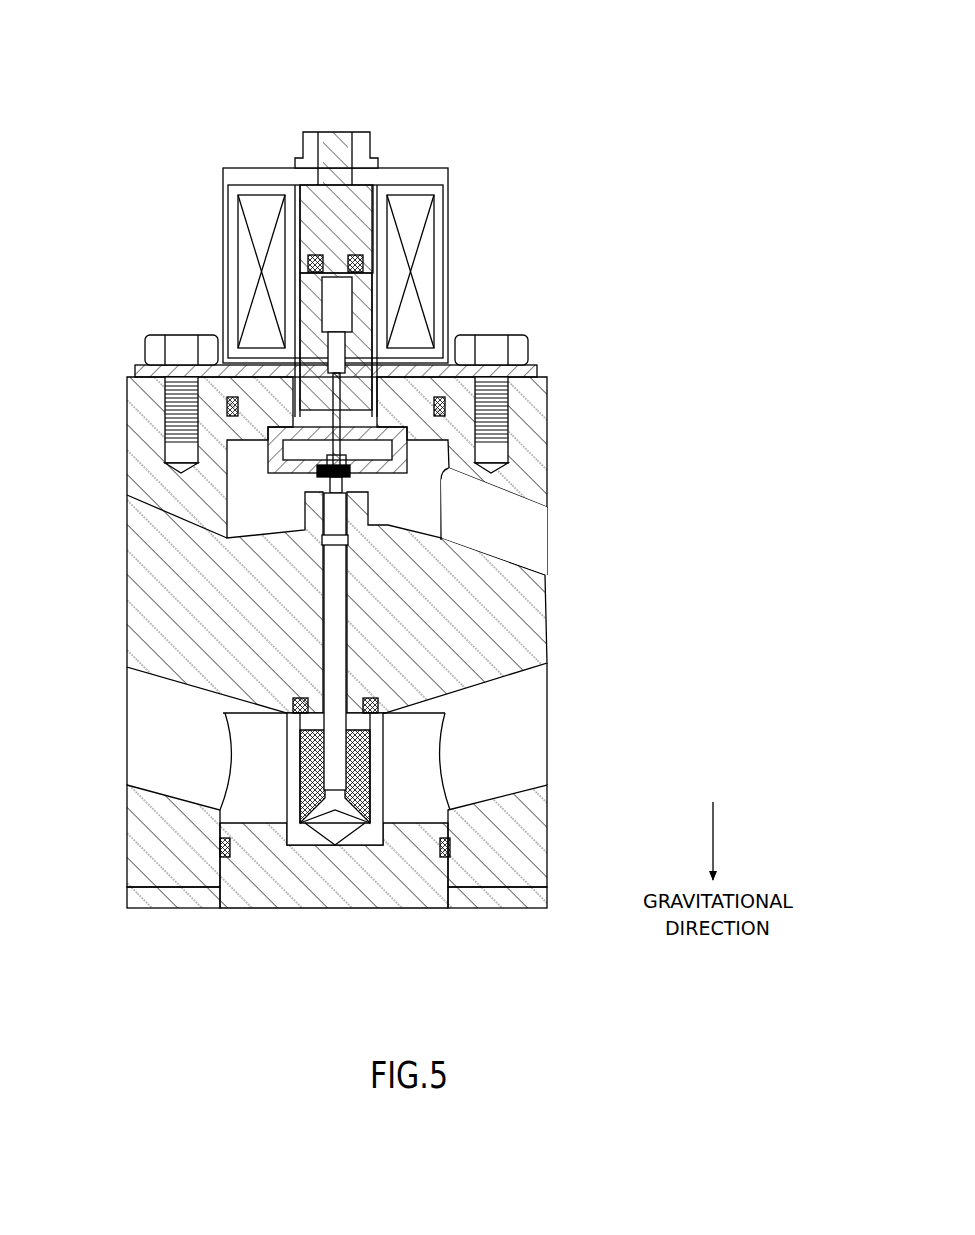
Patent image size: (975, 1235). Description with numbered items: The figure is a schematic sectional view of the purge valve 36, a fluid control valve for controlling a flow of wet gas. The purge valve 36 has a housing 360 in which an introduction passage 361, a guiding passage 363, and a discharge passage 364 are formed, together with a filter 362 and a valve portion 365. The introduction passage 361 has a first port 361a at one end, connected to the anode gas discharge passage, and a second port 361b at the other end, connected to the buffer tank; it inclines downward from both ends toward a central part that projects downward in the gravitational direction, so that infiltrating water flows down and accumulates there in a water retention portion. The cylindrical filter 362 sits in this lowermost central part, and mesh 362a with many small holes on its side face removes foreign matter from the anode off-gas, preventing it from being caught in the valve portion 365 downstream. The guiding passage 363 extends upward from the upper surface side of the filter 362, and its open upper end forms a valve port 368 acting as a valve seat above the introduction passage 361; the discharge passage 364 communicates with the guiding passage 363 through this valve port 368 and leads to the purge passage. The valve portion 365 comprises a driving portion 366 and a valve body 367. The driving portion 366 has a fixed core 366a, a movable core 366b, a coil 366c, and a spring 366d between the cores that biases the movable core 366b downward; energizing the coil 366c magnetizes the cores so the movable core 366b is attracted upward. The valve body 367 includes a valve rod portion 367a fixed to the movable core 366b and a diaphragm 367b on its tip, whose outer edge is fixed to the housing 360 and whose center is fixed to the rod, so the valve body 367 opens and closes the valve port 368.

The purge valve 36 is at (122, 80).
The housing 360 is at (505, 628).
The introduction passage 361 is at (338, 862).
The first port 361a is at (547, 718).
The second port 361b is at (127, 717).
The filter 362 is at (236, 829).
The mesh 362a is at (352, 843).
The guiding passage 363 is at (325, 618).
The discharge passage 364 is at (500, 493).
The valve portion 365 is at (484, 301).
The driving portion 366 is at (456, 274).
The fixed core 366a is at (357, 205).
The movable core 366b is at (370, 320).
The coil 366c is at (413, 233).
The spring 366d is at (365, 265).
The valve body 367 is at (508, 413).
The valve rod portion 367a is at (400, 410).
The diaphragm 367b is at (405, 422).
The valve port 368 is at (320, 470).